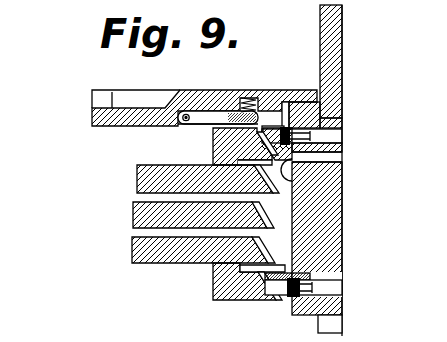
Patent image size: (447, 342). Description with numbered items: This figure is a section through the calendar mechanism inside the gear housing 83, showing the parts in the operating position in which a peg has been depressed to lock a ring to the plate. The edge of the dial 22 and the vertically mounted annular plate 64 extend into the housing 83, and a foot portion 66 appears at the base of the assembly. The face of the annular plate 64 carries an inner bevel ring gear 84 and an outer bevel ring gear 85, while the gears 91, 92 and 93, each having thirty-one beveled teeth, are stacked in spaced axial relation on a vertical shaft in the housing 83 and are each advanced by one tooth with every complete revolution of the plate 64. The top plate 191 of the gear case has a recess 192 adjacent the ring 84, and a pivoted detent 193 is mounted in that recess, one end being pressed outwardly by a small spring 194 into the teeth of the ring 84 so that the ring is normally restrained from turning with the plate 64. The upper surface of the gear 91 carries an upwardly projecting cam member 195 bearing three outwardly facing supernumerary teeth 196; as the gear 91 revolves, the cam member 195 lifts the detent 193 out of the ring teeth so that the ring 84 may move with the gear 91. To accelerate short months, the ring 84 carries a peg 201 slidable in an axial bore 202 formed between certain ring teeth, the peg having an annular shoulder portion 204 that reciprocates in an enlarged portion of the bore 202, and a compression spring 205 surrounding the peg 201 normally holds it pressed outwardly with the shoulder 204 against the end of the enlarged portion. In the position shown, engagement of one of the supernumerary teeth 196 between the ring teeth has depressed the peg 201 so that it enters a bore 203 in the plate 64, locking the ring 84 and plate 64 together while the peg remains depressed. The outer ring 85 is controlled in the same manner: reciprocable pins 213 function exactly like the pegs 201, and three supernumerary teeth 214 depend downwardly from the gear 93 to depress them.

The dial 22 is at (331, 62).
The annular plate 64 is at (335, 218).
The foot 66 is at (342, 327).
The gear housing 83 is at (90, 113).
The inner bevel ring gear 84 is at (342, 162).
The outer bevel ring gear 85 is at (280, 273).
The gear 91 is at (140, 179).
The gear 92 is at (140, 215).
The gear 93 is at (140, 251).
The top plate 191 is at (112, 92).
The recess 192 is at (212, 111).
The pivoted detent 193 is at (200, 111).
The spring 194 is at (253, 98).
The cam member 195 is at (221, 148).
The supernumerary teeth 196 is at (292, 172).
The peg 201 is at (342, 147).
The axial bore 202 is at (268, 130).
The bore 203 is at (338, 136).
The annular shoulder portion 204 is at (286, 102).
The compression spring 205 is at (318, 114).
The reciprocable pins 213 is at (340, 286).
The supernumerary teeth 214 is at (250, 292).